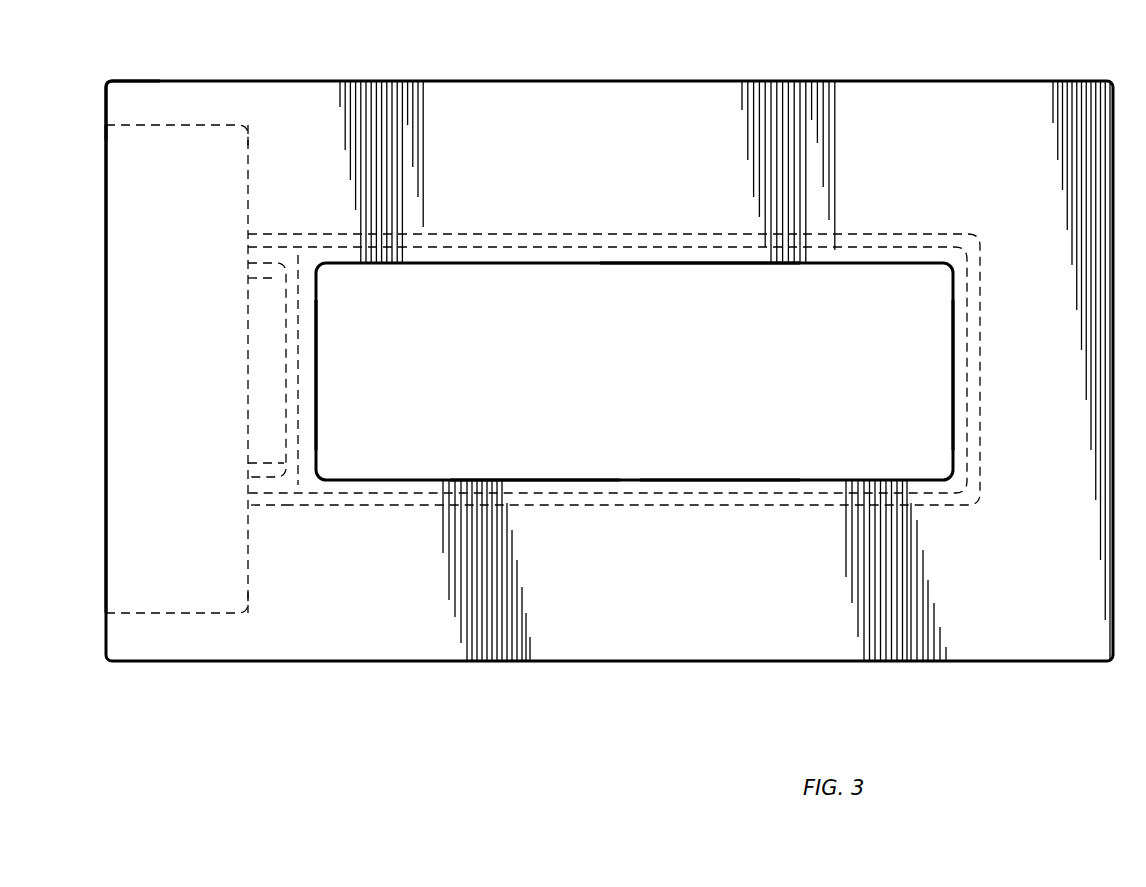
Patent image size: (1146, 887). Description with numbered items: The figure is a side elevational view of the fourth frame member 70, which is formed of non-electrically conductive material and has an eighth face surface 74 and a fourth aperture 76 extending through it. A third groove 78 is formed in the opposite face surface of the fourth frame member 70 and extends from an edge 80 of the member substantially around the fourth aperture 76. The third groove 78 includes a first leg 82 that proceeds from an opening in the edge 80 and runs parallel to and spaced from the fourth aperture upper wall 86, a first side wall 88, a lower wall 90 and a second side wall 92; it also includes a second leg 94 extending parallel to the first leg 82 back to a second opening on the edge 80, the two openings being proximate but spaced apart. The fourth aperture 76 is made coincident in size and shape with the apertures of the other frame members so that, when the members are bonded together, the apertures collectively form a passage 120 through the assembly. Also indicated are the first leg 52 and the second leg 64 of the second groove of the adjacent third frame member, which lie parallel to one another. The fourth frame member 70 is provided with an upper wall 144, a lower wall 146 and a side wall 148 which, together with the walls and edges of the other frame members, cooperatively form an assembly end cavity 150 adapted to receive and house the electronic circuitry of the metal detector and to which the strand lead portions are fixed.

The fourth frame member 70 is at (592, 86).
The eighth face surface 74 is at (918, 152).
The passage 120 is at (568, 344).
The first leg 82 is at (268, 233).
The fourth aperture 76 is at (954, 332).
The first leg 52 is at (275, 510).
The second leg 94 is at (273, 279).
The second leg 64 is at (271, 458).
The edge 80 is at (246, 347).
The assembly end cavity 150 is at (122, 133).
The side wall 148 is at (118, 274).
The lower wall 146 is at (118, 640).
The upper wall 144 is at (120, 100).
The fourth aperture upper wall 86 is at (700, 265).
The second side wall 92 is at (318, 388).
The first side wall 88 is at (952, 422).
The third groove 78 is at (568, 480).
The lower wall 90 is at (724, 480).